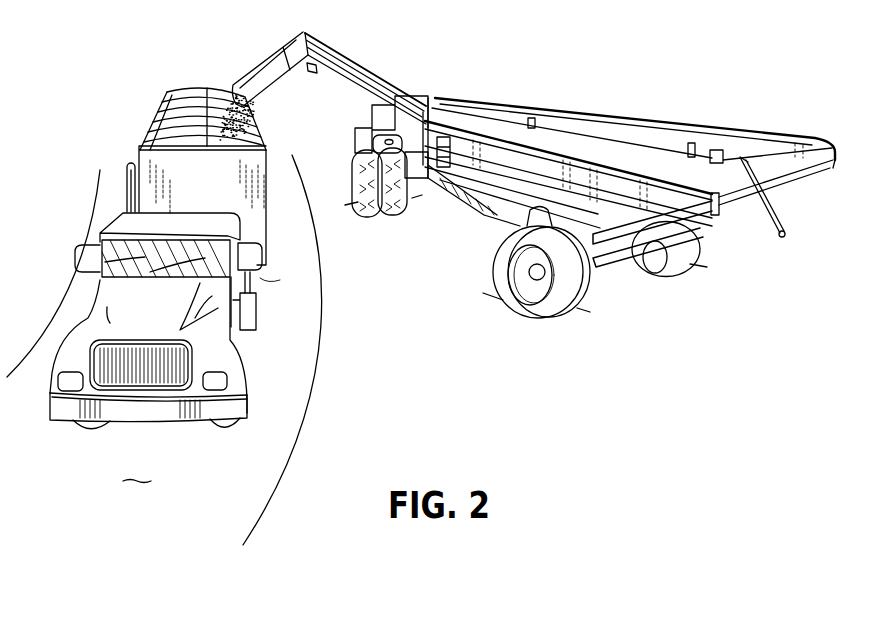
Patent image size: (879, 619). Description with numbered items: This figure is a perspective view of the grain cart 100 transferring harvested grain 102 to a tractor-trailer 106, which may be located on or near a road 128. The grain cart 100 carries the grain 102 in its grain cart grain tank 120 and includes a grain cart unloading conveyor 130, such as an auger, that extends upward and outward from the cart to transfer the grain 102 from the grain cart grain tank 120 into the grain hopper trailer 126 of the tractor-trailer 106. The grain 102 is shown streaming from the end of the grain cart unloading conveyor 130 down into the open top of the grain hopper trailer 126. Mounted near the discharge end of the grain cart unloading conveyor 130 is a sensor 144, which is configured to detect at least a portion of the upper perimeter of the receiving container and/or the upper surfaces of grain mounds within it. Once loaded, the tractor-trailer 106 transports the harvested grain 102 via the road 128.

The grain cart 100 is at (527, 175).
The grain 102 is at (253, 113).
The tractor-trailer 106 is at (96, 220).
The grain cart grain tank 120 is at (687, 129).
The grain hopper trailer 126 is at (140, 158).
The road 128 is at (143, 468).
The grain cart unloading conveyor 130 is at (353, 62).
The sensor 144 is at (313, 75).